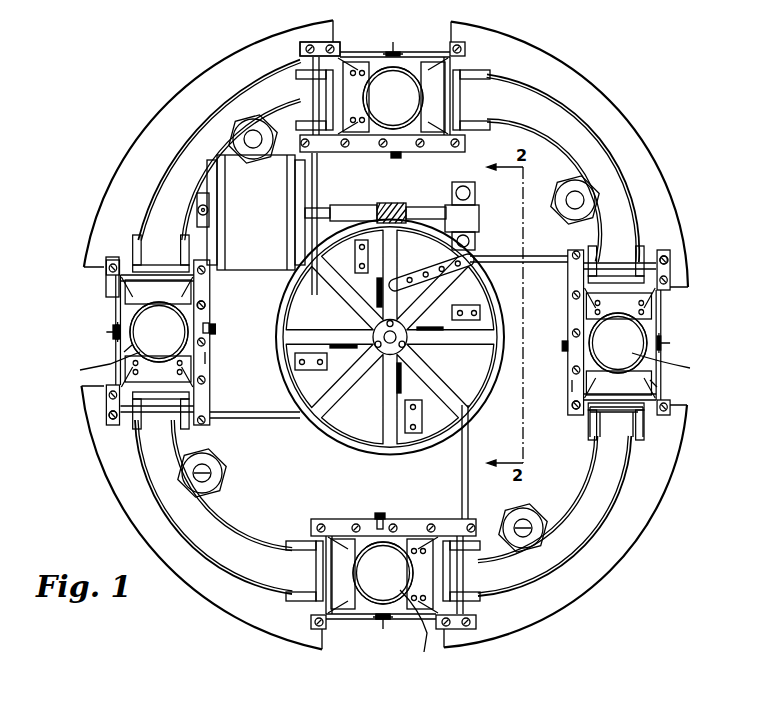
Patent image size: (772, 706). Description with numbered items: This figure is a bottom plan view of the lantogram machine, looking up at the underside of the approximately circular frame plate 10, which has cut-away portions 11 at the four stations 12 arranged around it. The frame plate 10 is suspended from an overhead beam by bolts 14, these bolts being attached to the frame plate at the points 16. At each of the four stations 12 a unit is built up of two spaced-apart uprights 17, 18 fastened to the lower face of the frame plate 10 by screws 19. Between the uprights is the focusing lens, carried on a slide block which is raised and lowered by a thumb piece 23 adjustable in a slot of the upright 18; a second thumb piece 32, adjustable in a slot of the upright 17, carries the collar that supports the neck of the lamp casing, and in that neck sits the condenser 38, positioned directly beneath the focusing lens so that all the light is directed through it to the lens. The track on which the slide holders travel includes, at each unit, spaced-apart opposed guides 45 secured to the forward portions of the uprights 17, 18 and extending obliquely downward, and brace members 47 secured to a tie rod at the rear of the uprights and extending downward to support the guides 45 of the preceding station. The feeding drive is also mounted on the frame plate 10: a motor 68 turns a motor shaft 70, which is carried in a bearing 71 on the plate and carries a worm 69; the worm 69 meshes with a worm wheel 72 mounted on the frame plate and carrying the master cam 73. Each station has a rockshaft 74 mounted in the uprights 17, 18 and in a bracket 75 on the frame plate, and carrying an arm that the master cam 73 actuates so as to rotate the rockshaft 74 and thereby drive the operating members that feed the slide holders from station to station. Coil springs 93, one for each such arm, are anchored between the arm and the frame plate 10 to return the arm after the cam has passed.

The frame plate 10 is at (190, 94).
The cut-away portions 11 is at (98, 283).
The stations 12 is at (393, 76).
The bolts 14 is at (251, 128).
The attachment point to frame plate 16 is at (204, 467).
The upright 17 is at (124, 352).
The upright 18 is at (207, 358).
The screws 19 is at (206, 304).
The thumb piece 23 is at (209, 329).
The thumb piece 32 is at (114, 333).
The condenser 38 is at (396, 42).
The guides 45 is at (146, 194).
The brace members 47 is at (600, 426).
The motor 68 is at (252, 262).
The worm 69 is at (405, 200).
The motor shaft 70 is at (438, 202).
The bearing 71 is at (474, 216).
The worm wheel 72 is at (488, 294).
The master cam 73 is at (470, 266).
The rockshaft 74 is at (317, 193).
The bracket 75 is at (356, 261).
The coil springs 93 is at (378, 292).